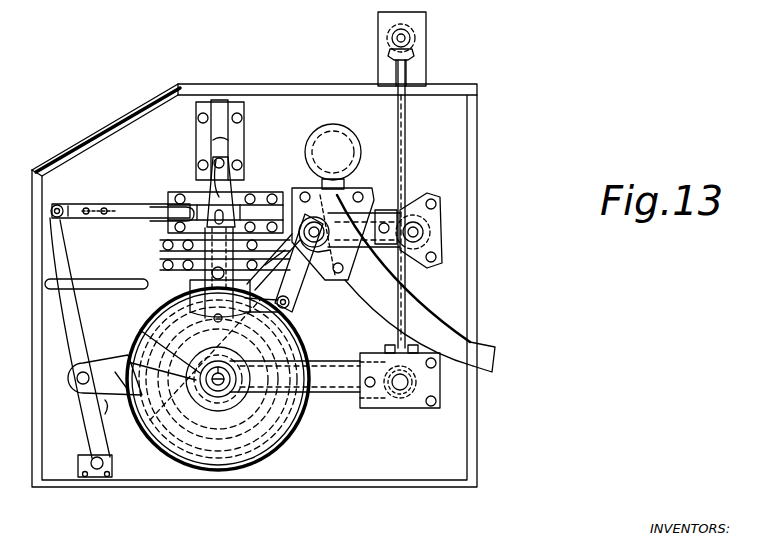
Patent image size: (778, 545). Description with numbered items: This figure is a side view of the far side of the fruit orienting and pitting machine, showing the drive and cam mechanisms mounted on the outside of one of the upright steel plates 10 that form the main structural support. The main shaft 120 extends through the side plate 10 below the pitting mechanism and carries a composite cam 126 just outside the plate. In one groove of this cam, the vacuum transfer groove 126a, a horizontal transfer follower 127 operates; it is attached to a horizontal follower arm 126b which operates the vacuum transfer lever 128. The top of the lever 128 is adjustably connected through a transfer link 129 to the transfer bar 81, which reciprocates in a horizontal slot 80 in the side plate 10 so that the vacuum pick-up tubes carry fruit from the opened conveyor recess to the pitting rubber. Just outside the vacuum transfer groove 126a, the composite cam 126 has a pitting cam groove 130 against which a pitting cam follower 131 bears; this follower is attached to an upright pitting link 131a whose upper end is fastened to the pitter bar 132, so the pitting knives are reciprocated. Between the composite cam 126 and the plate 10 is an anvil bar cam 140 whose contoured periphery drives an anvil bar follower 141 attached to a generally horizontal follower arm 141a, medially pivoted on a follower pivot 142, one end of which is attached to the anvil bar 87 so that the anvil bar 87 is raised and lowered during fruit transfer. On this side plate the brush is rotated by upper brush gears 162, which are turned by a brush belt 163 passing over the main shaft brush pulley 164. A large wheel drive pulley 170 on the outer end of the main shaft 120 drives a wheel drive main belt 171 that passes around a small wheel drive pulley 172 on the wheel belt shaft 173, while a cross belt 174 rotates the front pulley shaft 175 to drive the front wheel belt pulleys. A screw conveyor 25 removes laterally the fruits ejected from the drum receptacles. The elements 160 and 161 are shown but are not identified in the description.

The upright steel plate 10 is at (373, 470).
The screw conveyor 25 is at (334, 125).
The horizontal slot 80 is at (194, 197).
The transfer bar 81 is at (172, 206).
The anvil bar 87 is at (166, 242).
The main shaft 120 is at (216, 386).
The composite cam 126 is at (163, 468).
The vacuum transfer groove 126a is at (180, 480).
The horizontal follower arm 126b is at (108, 392).
The horizontal transfer follower 127 is at (138, 333).
The vacuum transfer lever 128 is at (64, 272).
The transfer link 129 is at (128, 205).
The pitting cam groove 130 is at (228, 470).
The pitting cam follower 131 is at (186, 292).
The upright pitting link 131a is at (212, 160).
The pitter bar 132 is at (222, 137).
The anvil bar cam 140 is at (300, 344).
The anvil bar follower 141 is at (278, 273).
The follower arm 141a is at (272, 296).
The follower pivot 142 is at (276, 258).
The control knob 160 is at (414, 44).
The control rod 161 is at (405, 144).
The upper brush gear 162 is at (407, 400).
The brush belt 163 is at (352, 400).
The main shaft brush pulley 164 is at (222, 388).
The large wheel drive pulley 170 is at (168, 418).
The wheel drive main belt 171 is at (305, 300).
The small wheel drive pulley 172 is at (325, 265).
The wheel belt shaft 173 is at (312, 215).
The cross belt 174 is at (357, 235).
The front pulley shaft 175 is at (425, 232).